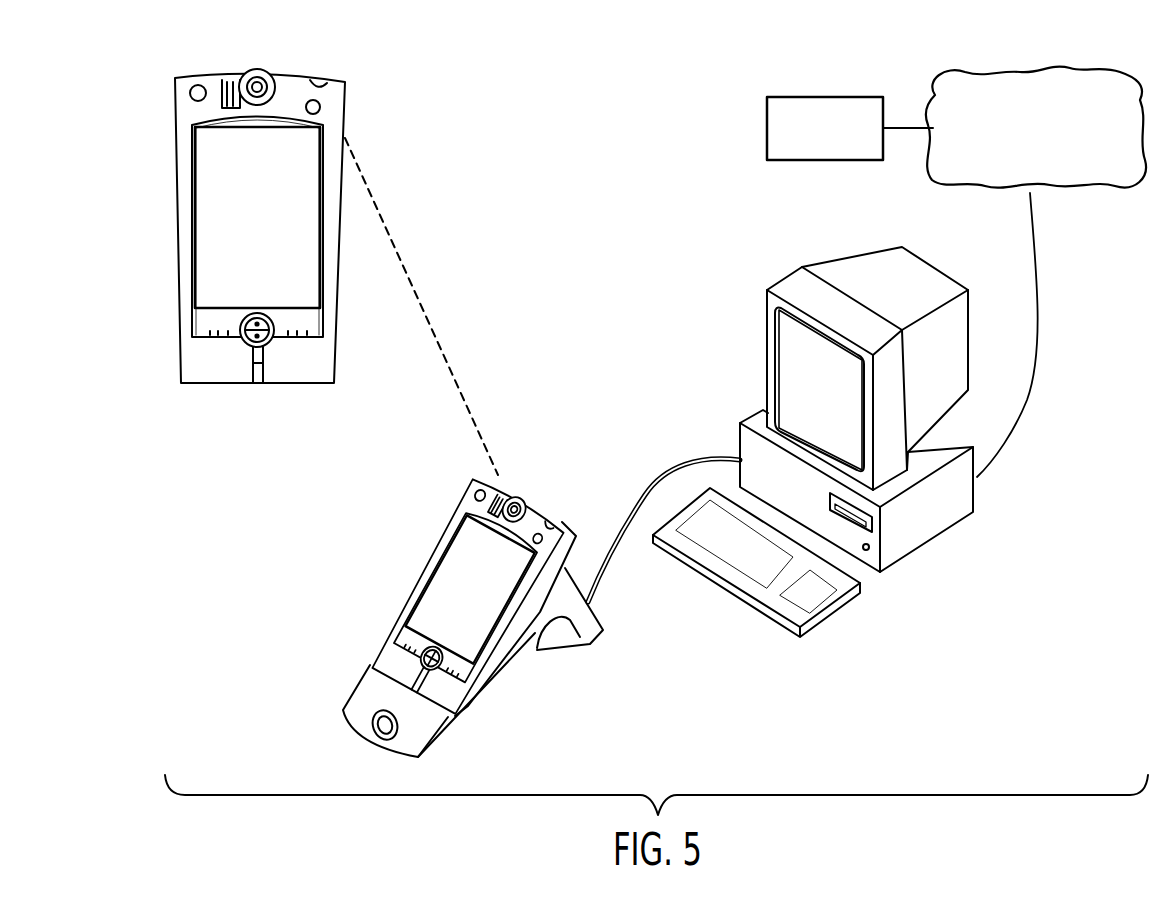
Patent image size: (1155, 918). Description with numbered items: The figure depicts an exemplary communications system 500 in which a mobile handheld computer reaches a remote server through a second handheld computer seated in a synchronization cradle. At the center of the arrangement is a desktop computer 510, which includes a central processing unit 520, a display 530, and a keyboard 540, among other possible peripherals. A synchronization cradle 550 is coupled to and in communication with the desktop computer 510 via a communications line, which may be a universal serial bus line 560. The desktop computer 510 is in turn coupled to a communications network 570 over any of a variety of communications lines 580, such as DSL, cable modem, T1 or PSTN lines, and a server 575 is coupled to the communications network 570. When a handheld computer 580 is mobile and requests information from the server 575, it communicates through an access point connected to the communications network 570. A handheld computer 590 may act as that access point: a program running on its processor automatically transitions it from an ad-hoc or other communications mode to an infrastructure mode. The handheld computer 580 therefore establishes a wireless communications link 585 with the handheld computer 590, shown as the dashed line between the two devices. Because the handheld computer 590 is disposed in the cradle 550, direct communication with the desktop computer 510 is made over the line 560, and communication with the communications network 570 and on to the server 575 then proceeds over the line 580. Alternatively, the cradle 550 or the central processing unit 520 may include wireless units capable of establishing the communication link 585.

The communications system 500 is at (754, 690).
The desktop computer 510 is at (957, 609).
The central processing unit 520 is at (967, 501).
The display 530 is at (960, 349).
The keyboard 540 is at (828, 613).
The synchronization cradle 550 is at (535, 649).
The universal serial bus (USB) line 560 is at (695, 465).
The communications network 570 is at (1108, 184).
The server 575 is at (867, 98).
The handheld computer / communications line 580 is at (336, 111).
The wireless communications link 585 is at (415, 284).
The handheld computer 590 is at (453, 692).